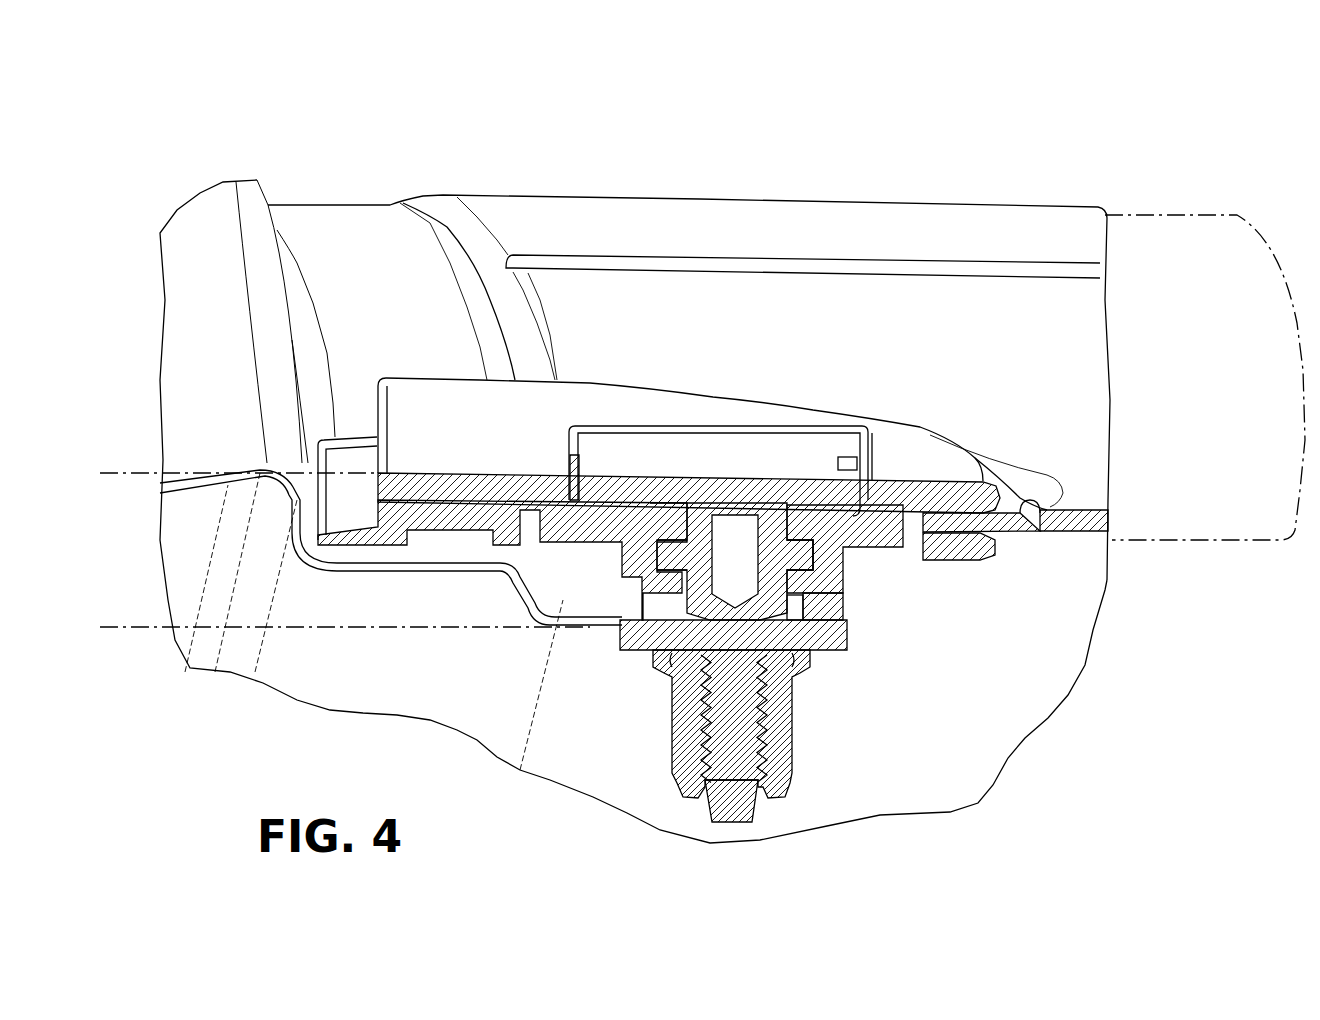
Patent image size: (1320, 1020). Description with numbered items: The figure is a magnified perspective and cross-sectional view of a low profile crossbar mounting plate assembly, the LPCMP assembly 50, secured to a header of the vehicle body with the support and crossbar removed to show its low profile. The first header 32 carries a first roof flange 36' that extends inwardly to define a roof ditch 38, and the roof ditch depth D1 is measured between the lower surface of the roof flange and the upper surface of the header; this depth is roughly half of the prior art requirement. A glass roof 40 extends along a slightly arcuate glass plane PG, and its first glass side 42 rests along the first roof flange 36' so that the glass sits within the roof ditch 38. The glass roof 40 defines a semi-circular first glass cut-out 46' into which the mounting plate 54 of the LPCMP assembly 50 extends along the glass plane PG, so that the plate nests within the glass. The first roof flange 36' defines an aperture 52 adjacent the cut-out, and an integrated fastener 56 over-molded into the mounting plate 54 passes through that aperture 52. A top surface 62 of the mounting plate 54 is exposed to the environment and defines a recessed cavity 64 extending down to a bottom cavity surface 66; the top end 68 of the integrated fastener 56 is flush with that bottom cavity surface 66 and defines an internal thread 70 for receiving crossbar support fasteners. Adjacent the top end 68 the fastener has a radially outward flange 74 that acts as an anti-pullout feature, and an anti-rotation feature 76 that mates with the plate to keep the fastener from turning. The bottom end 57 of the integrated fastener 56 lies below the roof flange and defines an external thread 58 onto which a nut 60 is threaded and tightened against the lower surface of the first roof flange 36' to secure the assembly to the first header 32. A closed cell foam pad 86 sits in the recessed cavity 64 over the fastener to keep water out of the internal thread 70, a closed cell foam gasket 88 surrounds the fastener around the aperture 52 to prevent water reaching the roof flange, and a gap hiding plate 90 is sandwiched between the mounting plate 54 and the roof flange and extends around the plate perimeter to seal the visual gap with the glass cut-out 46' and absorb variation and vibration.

The first header 32 is at (218, 210).
The first glass side 42 is at (470, 217).
The glass roof 40 is at (1170, 88).
The glass plane PG is at (1183, 250).
The roof ditch depth D1 is at (108, 480).
The top surface 62 is at (527, 392).
The LPCMP assembly 50 is at (588, 372).
The mounting plate 54 is at (757, 397).
The recessed cavity 64 is at (697, 437).
The bottom cavity surface 66 is at (641, 470).
The flange 74 is at (630, 452).
The integrated fastener 56 is at (800, 537).
The internal thread 70 is at (740, 555).
The top end 68 is at (777, 537).
The anti-rotation feature 76 is at (685, 527).
The pad 86 is at (657, 505).
The gap hiding plate 90 is at (960, 547).
The first glass cut-out 46' is at (987, 548).
The gasket 88 is at (827, 607).
The roof ditch 38 is at (615, 607).
The first roof flange 36' is at (652, 709).
The external thread 58 is at (760, 757).
The nut 60 is at (793, 730).
The bottom end 57 is at (733, 823).
The aperture 52 is at (777, 643).